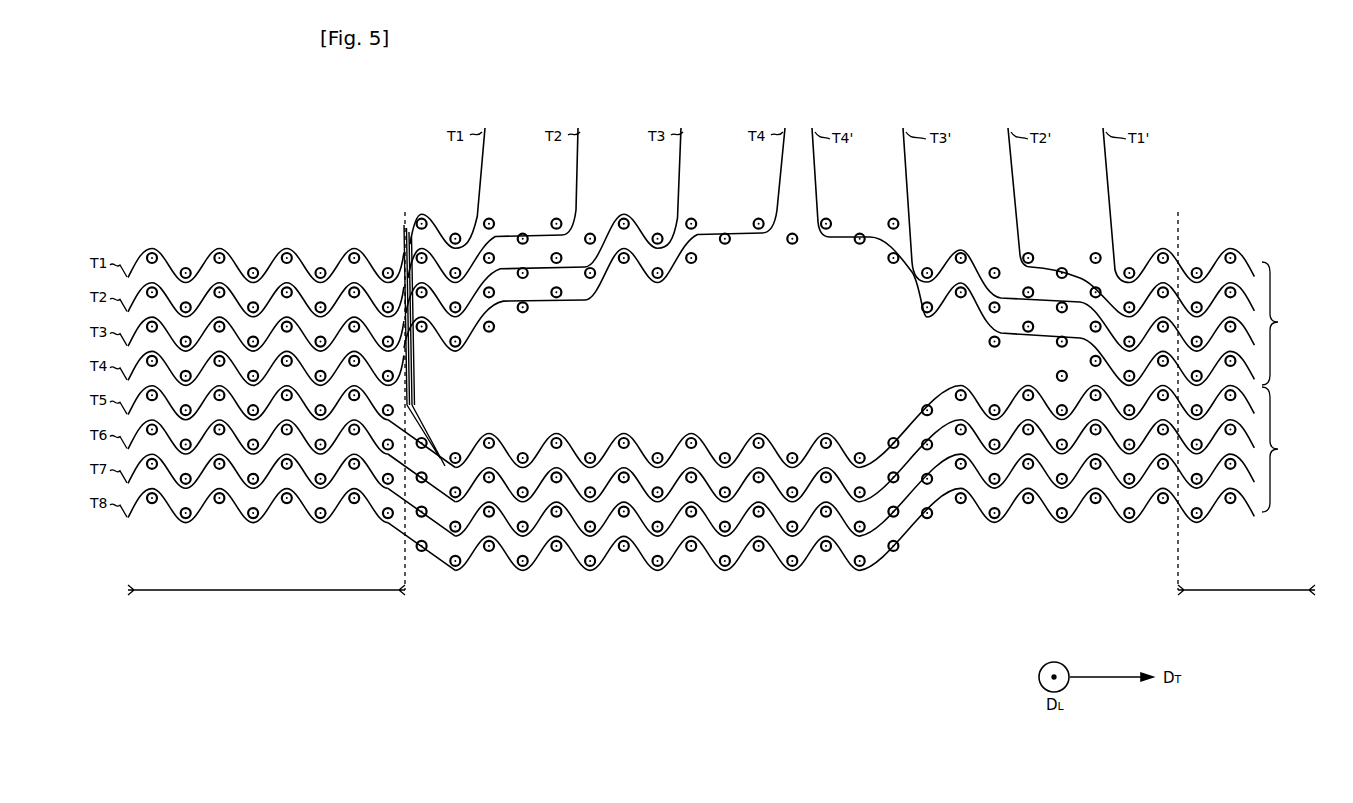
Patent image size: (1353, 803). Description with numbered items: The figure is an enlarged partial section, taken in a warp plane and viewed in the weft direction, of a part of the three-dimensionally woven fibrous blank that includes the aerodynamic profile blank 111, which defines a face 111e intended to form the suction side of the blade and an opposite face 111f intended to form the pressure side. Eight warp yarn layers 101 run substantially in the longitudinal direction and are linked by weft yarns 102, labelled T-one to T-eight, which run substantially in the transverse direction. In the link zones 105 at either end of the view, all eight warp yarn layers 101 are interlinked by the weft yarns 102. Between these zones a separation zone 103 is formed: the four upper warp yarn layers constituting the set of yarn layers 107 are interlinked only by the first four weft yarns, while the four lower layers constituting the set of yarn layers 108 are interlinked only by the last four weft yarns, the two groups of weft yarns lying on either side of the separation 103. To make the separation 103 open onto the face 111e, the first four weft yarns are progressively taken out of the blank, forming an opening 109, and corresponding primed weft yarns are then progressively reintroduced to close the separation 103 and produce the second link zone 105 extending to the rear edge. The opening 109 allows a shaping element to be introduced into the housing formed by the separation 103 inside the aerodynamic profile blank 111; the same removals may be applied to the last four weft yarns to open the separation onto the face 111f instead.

The warp yarn layers 101 is at (345, 266).
The weft yarns 102 is at (205, 285).
The separation zone 103 is at (782, 367).
The link zones 105 is at (282, 623).
The set of yarn layers 107 is at (1286, 323).
The set of yarn layers 108 is at (1286, 449).
The opening 109 is at (798, 118).
The aerodynamic profile blank 111 is at (955, 102).
The face of the aerodynamic profile blank 111e is at (358, 228).
The face of the aerodynamic profile blank 111f is at (312, 537).